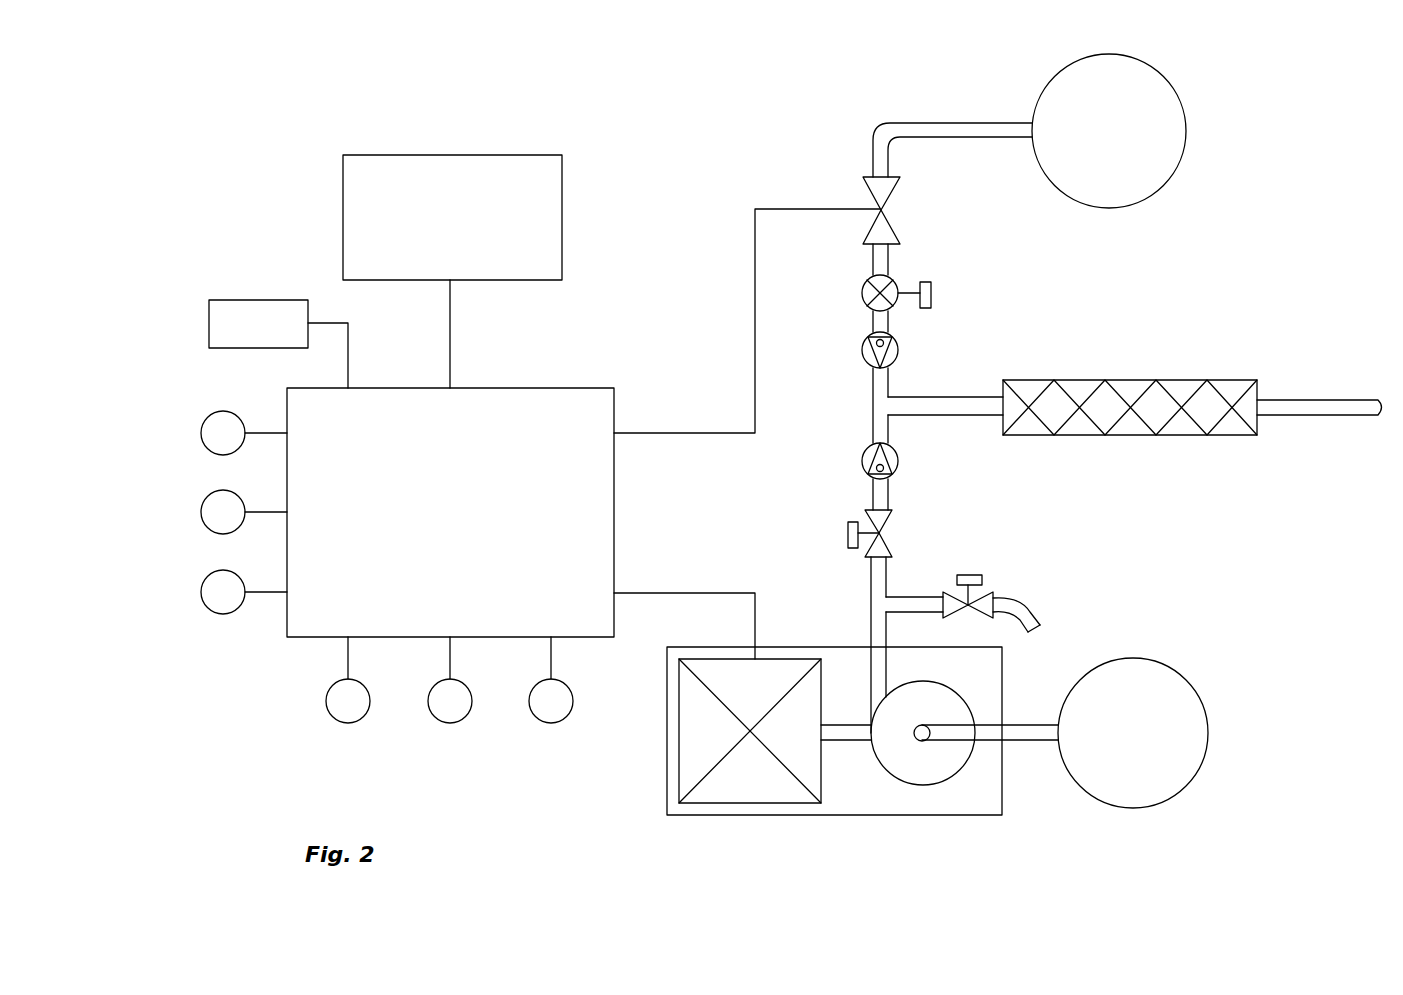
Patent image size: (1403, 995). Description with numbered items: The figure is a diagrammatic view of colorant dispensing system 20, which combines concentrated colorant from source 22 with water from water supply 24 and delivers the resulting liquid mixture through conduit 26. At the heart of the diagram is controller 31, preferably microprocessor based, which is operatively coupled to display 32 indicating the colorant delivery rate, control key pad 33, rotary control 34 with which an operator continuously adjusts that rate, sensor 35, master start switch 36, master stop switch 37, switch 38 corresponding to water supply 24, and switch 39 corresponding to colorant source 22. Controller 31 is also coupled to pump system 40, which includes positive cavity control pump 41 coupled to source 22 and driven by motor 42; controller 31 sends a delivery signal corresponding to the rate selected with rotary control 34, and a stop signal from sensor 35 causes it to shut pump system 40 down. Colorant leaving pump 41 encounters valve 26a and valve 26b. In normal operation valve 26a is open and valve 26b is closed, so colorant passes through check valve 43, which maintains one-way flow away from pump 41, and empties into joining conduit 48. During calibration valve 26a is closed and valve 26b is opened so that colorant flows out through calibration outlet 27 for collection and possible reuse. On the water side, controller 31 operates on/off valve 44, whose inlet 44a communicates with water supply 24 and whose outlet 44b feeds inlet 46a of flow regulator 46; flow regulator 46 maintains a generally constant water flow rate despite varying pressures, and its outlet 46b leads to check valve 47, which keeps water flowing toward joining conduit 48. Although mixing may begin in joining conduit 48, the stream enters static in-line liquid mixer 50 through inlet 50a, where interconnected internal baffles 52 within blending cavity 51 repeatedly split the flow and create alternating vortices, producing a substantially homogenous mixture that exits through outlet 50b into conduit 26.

The dispensing system 20 is at (1222, 223).
The source 22 is at (1147, 746).
The water supply 24 is at (1123, 144).
The conduit 26 is at (1289, 400).
The valve 26a is at (848, 535).
The valve 26b is at (968, 575).
The calibration outlet 27 is at (1040, 616).
The controller 31 is at (464, 525).
The display 32 is at (466, 230).
The control key pad 33 is at (273, 336).
The rotary control 34 is at (237, 446).
The sensor 35 is at (237, 525).
The master start switch 36 is at (237, 605).
The master stop switch 37 is at (362, 714).
The switch 38 is at (464, 714).
The switch 39 is at (565, 714).
The pump system 40 is at (866, 815).
The positive cavity control pump 41 is at (929, 762).
The motor 42 is at (750, 765).
The check valve 43 is at (897, 458).
The on/off valve 44 is at (889, 222).
The inlet 44a is at (873, 175).
The outlet 44b is at (863, 247).
The flow regulator 46 is at (931, 295).
The inlet 46a is at (889, 275).
The outlet 46b is at (875, 317).
The check valve 47 is at (862, 358).
The joining conduit 48 is at (872, 406).
The static in-line liquid mixer 50 is at (1067, 378).
The inlet 50a is at (1003, 405).
The outlet 50b is at (1262, 412).
The blending cavity 51 is at (1125, 390).
The internal baffles 52 is at (1097, 425).